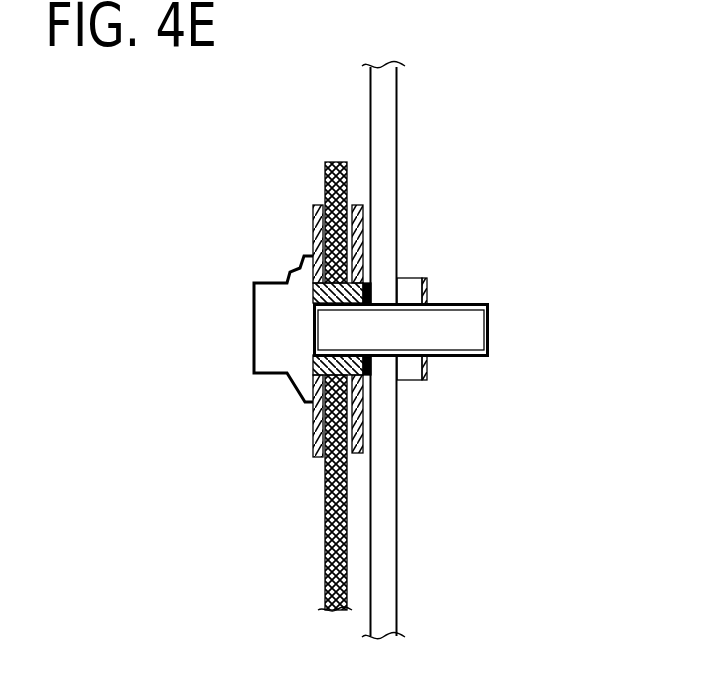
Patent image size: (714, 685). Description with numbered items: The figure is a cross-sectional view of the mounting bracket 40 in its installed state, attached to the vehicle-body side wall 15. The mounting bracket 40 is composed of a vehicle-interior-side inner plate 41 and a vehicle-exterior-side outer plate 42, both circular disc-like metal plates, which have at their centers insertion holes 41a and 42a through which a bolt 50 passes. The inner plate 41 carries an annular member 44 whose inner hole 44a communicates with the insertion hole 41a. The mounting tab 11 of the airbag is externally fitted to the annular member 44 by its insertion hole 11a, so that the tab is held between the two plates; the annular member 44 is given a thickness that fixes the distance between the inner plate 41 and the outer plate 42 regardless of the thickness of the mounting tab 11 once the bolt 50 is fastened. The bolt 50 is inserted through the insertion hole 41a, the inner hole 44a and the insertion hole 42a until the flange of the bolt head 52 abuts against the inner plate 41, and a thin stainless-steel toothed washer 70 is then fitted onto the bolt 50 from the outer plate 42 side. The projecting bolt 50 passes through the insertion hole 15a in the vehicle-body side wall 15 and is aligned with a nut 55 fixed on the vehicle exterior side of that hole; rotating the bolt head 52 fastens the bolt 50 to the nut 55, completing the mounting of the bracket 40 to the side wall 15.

The mounting tab 11 is at (342, 160).
The insertion hole 11a is at (313, 267).
The vehicle-body side wall 15 is at (388, 108).
The insertion hole 15a is at (400, 357).
The mounting bracket 40 is at (542, 165).
The inner plate 41 is at (313, 227).
The insertion hole 41a is at (325, 327).
The outer plate 42 is at (363, 223).
The insertion hole 42a is at (365, 327).
The annular member 44 is at (363, 422).
The inner hole 44a is at (343, 327).
The bolt 50 is at (490, 330).
The bolt head 52 is at (253, 315).
The nut 55 is at (425, 290).
The toothed washer 70 is at (368, 292).